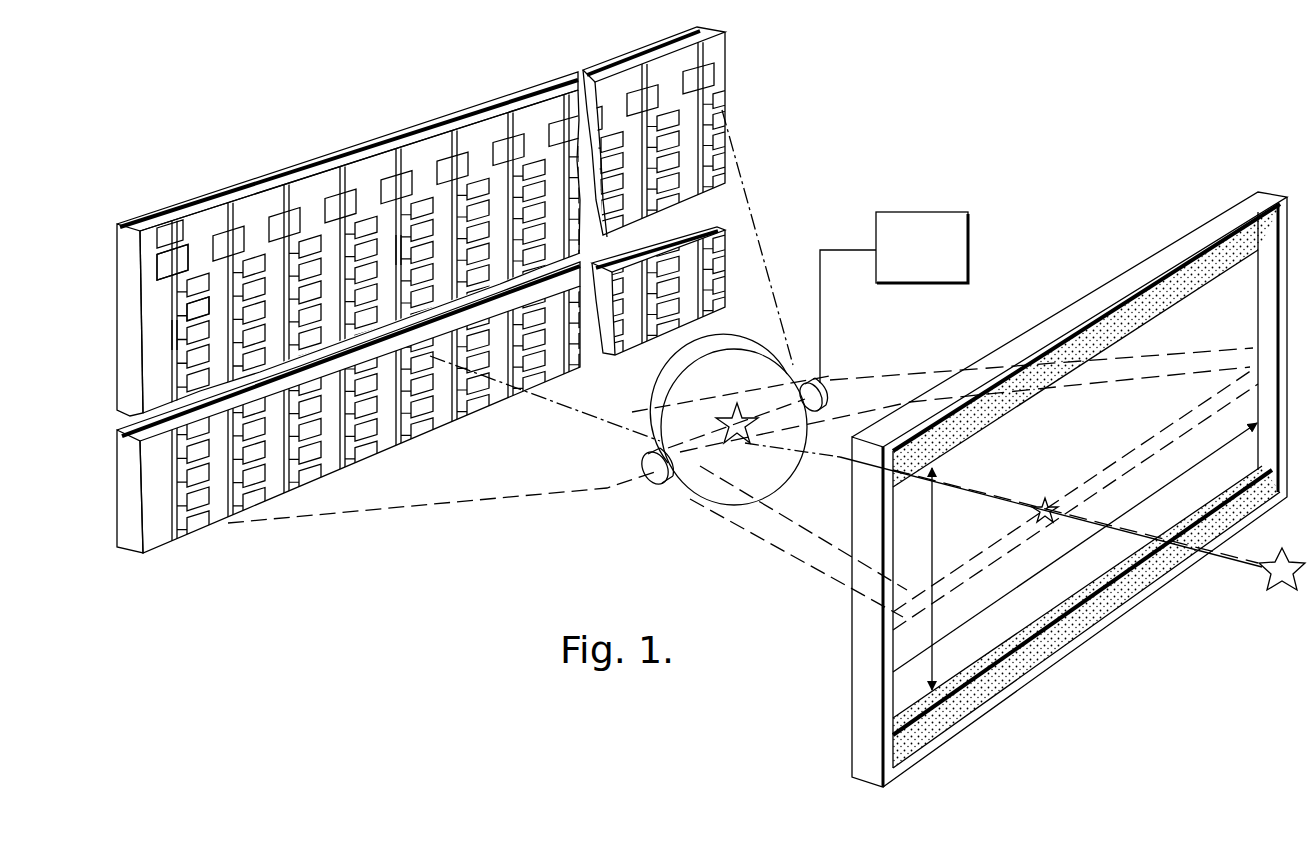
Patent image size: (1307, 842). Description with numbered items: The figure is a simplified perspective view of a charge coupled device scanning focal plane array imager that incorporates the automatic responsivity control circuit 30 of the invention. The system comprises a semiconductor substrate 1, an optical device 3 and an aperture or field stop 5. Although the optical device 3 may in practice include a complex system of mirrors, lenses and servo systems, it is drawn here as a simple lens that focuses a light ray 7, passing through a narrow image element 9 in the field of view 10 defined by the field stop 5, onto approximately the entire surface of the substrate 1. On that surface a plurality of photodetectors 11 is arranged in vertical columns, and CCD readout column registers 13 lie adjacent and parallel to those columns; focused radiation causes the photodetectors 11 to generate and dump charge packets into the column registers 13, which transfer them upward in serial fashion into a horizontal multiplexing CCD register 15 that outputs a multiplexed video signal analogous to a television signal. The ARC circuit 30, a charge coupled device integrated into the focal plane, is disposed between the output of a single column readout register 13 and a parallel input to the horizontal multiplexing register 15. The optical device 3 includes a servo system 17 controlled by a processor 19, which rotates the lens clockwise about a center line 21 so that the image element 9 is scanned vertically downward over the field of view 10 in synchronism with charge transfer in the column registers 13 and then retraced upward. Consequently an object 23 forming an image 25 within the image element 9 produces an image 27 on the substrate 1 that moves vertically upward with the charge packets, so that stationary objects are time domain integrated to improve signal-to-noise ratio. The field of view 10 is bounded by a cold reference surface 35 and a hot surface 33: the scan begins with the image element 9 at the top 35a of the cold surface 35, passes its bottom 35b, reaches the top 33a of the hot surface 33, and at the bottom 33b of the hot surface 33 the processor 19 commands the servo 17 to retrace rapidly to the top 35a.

The semiconductor substrate 1 is at (400, 128).
The optical device 3 is at (752, 352).
The field stop 5 is at (1069, 475).
The light ray 7 is at (1245, 563).
The image element 9 is at (1150, 468).
The field of view 10 is at (897, 672).
The photodetectors 11 is at (187, 305).
The CCD readout column registers 13 is at (172, 335).
The horizontal multiplexing CCD register 15 is at (313, 176).
The servo system 17 is at (817, 384).
The processor 19 is at (945, 212).
The center line 21 is at (872, 370).
The object 23 is at (1283, 594).
The image 25 is at (1045, 507).
The image 27 is at (405, 250).
The automatic responsivity control (ARC) circuit 30 is at (172, 258).
The hot surface 33 is at (1086, 617).
The top of the hot surface 33a is at (1078, 608).
The bottom of the hot surface 33b is at (1098, 625).
The cold reference surface 35 is at (1086, 325).
The top of the cold surface 35a is at (1235, 222).
The bottom of the cold surface 35b is at (1223, 275).